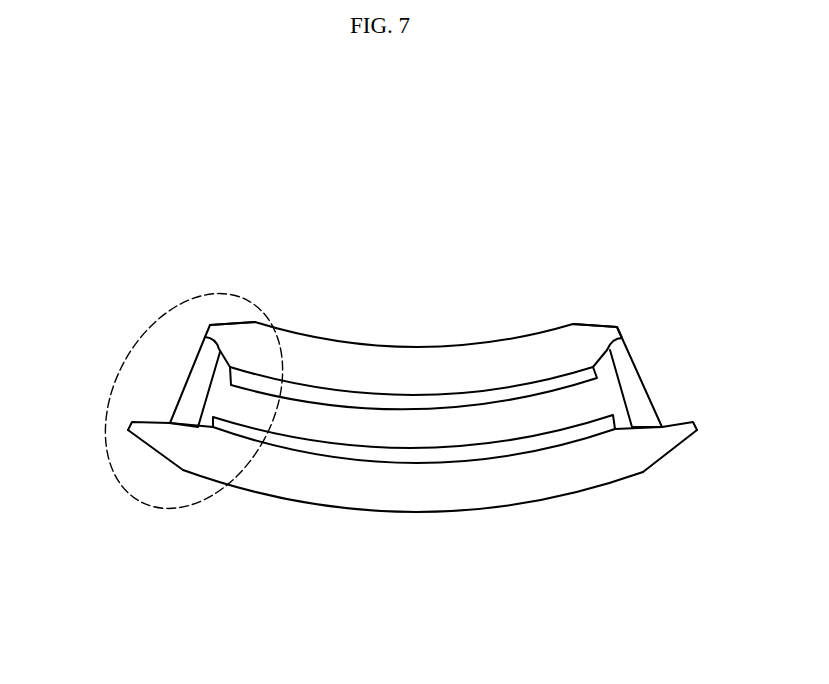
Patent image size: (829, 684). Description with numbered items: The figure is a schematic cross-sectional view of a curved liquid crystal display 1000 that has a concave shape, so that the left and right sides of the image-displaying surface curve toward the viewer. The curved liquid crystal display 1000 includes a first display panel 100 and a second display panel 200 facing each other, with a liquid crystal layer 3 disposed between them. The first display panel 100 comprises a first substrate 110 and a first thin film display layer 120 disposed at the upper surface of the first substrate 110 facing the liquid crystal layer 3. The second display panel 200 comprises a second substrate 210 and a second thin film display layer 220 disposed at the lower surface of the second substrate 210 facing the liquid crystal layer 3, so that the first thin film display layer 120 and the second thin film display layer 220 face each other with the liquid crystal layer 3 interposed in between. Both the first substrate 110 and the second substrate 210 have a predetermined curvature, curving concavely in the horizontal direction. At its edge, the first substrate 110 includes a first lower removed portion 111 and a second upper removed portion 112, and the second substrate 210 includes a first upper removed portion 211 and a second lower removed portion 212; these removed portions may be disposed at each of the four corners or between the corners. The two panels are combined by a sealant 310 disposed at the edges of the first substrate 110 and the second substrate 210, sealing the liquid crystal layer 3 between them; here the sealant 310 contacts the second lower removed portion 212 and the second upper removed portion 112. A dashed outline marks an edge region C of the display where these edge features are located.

The curved liquid crystal display 1000 is at (437, 110).
The second display panel 200 is at (550, 232).
The second substrate 210 is at (540, 357).
The second thin film display layer 220 is at (450, 400).
The first upper removed portion 211 is at (232, 323).
The second lower removed portion 212 is at (197, 348).
The first display panel 100 is at (583, 567).
The first substrate 110 is at (565, 480).
The first thin film display layer 120 is at (478, 453).
The first lower removed portion 111 is at (160, 452).
The second upper removed portion 112 is at (153, 423).
The sealant 310 is at (193, 393).
The liquid crystal layer 3 is at (345, 428).
The region C is at (202, 507).